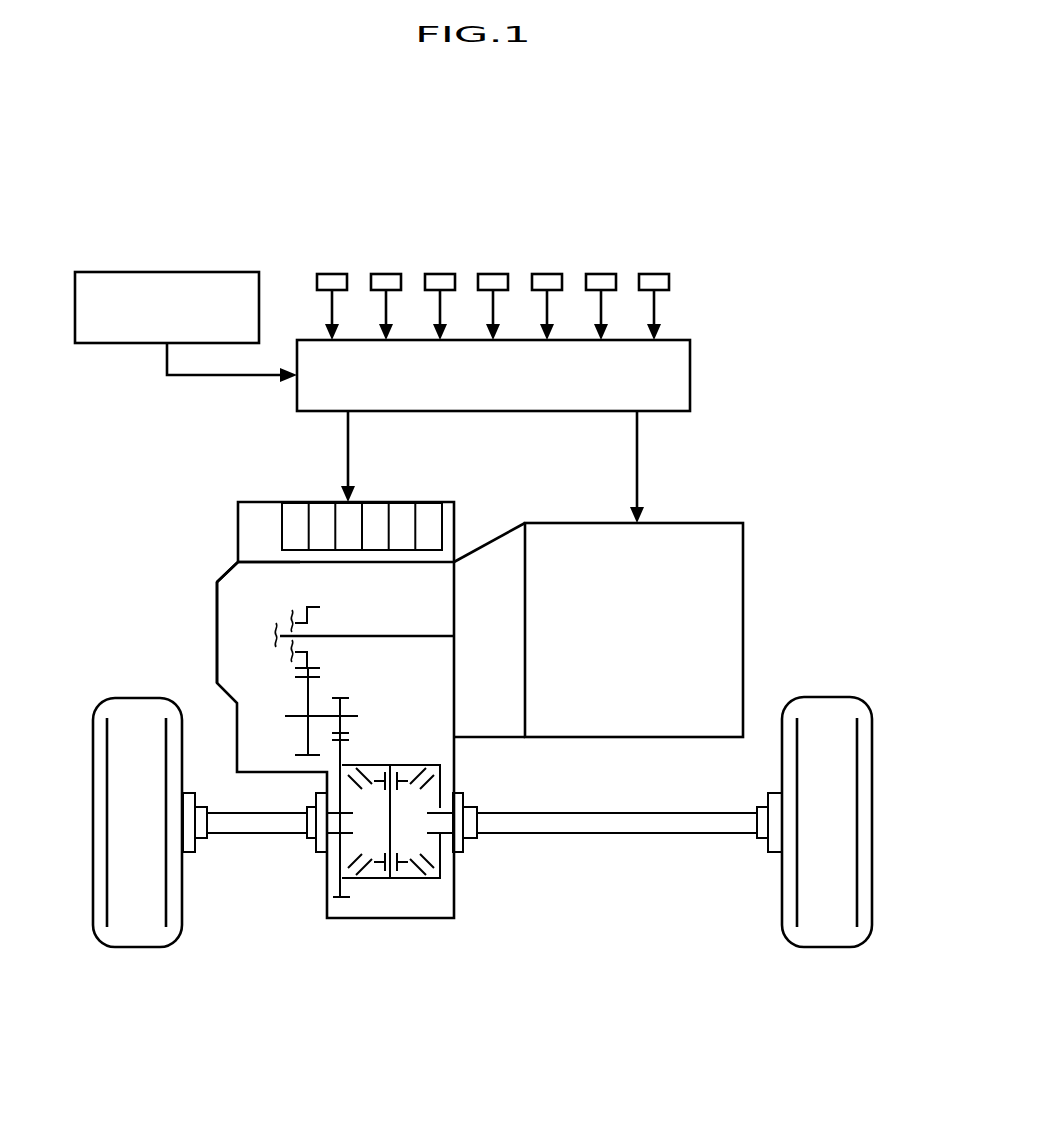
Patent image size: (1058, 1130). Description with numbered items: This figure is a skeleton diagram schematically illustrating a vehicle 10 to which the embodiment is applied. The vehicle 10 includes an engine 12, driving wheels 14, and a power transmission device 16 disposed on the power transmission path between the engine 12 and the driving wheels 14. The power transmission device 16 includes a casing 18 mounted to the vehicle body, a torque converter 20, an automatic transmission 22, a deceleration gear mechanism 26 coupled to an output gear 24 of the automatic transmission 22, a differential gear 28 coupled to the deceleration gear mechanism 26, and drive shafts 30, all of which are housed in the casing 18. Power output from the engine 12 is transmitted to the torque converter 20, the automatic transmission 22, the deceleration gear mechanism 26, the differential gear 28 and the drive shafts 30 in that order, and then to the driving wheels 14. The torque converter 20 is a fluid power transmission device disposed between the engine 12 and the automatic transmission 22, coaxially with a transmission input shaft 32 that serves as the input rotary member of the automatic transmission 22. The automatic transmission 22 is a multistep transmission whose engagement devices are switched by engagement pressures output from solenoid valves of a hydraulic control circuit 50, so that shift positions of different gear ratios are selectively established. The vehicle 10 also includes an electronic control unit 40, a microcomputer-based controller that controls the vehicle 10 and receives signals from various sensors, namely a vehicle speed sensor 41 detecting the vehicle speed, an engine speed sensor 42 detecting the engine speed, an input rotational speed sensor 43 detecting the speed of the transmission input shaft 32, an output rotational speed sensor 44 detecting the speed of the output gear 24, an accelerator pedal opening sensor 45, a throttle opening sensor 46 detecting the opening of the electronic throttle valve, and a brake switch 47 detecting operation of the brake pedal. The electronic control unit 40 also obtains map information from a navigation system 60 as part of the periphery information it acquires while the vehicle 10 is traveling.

The vehicle 10 is at (752, 182).
The engine 12 is at (696, 536).
The driving wheels 14 is at (136, 708).
The power transmission device 16 is at (190, 500).
The casing 18 is at (230, 570).
The torque converter 20 is at (486, 553).
The automatic transmission 22 is at (227, 630).
The output gear 24 is at (302, 607).
The deceleration gear mechanism 26 is at (368, 704).
The differential gear 28 is at (403, 905).
The drive shafts 30 is at (252, 833).
The transmission input shaft 32 is at (404, 636).
The electronic control unit 40 is at (690, 378).
The vehicle speed sensor 41 is at (336, 274).
The engine speed sensor 42 is at (390, 274).
The input rotational speed sensor 43 is at (444, 274).
The output rotational speed sensor 44 is at (497, 274).
The accelerator pedal opening sensor 45 is at (551, 274).
The throttle opening sensor 46 is at (605, 274).
The brake switch 47 is at (658, 274).
The hydraulic control circuit 50 is at (260, 518).
The navigation system 60 is at (226, 272).